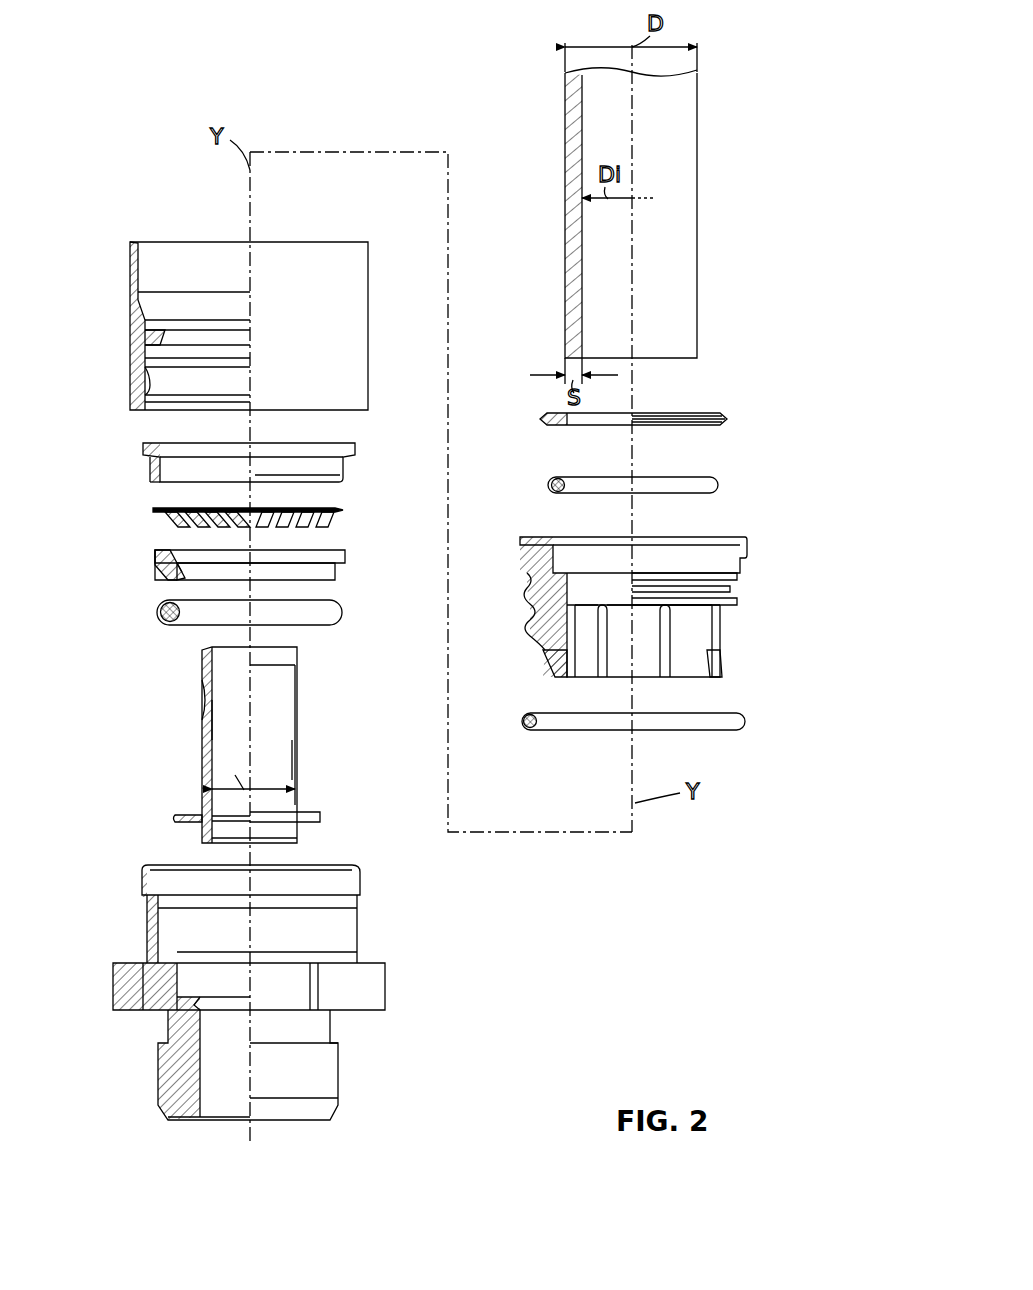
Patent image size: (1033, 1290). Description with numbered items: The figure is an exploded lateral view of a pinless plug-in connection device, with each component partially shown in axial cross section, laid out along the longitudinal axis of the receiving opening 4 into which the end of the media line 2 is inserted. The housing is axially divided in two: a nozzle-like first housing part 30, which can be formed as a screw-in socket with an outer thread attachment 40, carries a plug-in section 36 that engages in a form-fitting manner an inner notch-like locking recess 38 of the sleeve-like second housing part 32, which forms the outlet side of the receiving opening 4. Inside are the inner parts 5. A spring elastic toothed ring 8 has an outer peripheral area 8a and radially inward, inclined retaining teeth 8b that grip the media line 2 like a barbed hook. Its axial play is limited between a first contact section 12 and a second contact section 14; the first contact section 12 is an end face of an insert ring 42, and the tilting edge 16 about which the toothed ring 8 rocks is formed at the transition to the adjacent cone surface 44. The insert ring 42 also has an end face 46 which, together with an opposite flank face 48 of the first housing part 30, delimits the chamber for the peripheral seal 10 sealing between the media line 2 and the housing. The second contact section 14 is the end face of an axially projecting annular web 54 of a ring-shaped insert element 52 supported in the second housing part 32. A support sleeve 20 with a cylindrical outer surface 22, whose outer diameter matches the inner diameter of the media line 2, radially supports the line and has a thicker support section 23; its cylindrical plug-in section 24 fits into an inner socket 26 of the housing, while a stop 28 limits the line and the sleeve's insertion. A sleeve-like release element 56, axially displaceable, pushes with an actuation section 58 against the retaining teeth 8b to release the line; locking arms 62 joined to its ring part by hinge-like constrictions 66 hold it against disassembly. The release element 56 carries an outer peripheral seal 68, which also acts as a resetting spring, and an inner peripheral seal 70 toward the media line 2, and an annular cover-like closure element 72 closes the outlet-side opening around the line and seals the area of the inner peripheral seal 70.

The media line 2 is at (690, 130).
The receiving opening 4 is at (182, 258).
The inner parts 5 is at (395, 485).
The toothed ring 8 is at (160, 520).
The outer peripheral area 8a is at (332, 511).
The retaining teeth 8b is at (326, 526).
The peripheral seal 10 is at (218, 617).
The first contact section 12 is at (335, 548).
The second contact section 14 is at (162, 490).
The tilting edge 16 is at (166, 552).
The support sleeve 20 is at (284, 717).
The cylindrical outer surface 22 is at (202, 734).
The support section 23 is at (214, 720).
The plug-in section 24 is at (300, 830).
The inner socket 26 is at (200, 1012).
The stop 28 is at (192, 815).
The first housing part 30 is at (342, 946).
The second housing part 32 is at (343, 272).
The plug-in section 36 is at (142, 887).
The locking recess 38 is at (150, 383).
The outer thread attachment 40 is at (313, 1080).
The insert ring 42 is at (172, 572).
The cone surface 44 is at (180, 560).
The end face 46 is at (172, 583).
The flank face 48 is at (172, 946).
The insert element 52 is at (360, 450).
The annular web 54 is at (155, 470).
The release element 56 is at (726, 540).
The actuation section 58 is at (548, 670).
The locking arms 62 is at (588, 640).
The hinge-like constrictions 66 is at (532, 598).
The outer peripheral seal 68 is at (578, 728).
The inner peripheral seal 70 is at (675, 479).
The closure element 72 is at (685, 413).